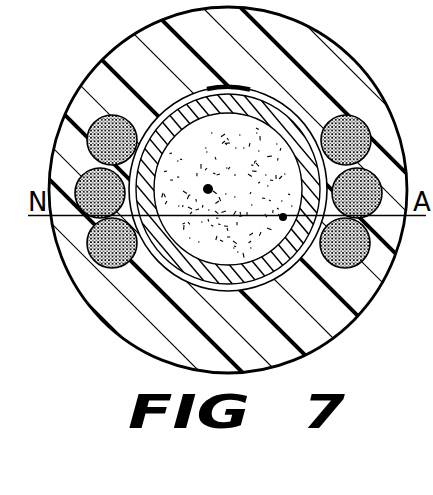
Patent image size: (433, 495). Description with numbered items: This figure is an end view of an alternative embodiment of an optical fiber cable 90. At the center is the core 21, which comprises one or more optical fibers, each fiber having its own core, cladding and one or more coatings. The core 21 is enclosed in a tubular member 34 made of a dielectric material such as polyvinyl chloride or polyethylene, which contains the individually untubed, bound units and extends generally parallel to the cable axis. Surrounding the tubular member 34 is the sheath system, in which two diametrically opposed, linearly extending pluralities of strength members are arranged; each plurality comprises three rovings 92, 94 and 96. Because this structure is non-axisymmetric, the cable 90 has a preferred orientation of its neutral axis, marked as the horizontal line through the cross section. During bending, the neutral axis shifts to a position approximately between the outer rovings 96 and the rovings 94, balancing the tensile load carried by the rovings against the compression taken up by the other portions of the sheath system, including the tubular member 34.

The cable 90 is at (357, 63).
The tubular member 34 is at (223, 291).
The core 21 is at (181, 110).
The roving 92 is at (108, 125).
The roving 94 is at (82, 187).
The roving 96 is at (94, 252).